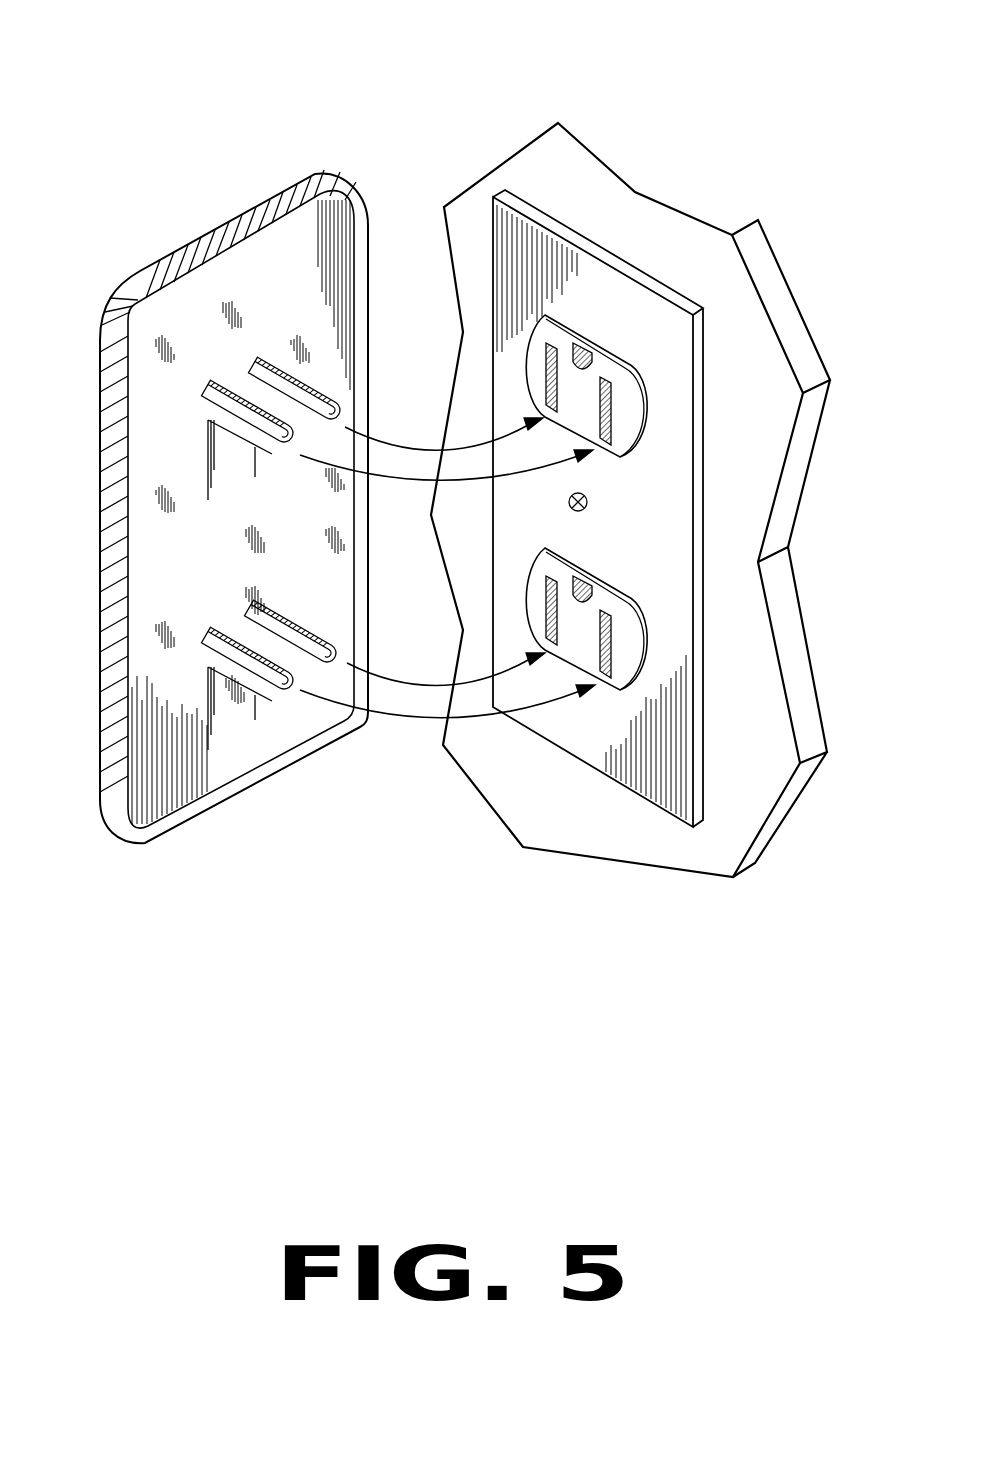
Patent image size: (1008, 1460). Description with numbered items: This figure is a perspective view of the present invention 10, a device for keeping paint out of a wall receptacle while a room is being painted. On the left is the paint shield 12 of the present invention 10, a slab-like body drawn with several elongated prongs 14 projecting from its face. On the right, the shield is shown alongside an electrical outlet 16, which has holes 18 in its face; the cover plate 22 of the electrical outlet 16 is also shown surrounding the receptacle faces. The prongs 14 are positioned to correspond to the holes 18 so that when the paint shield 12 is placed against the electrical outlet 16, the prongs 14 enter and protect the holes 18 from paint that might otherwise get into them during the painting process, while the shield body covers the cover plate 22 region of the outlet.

The present invention 10 is at (120, 215).
The paint shield 12 is at (222, 233).
The prongs 14 is at (277, 690).
The electrical outlet 16 is at (553, 325).
The holes 18 is at (607, 397).
The cover plate 22 is at (650, 453).